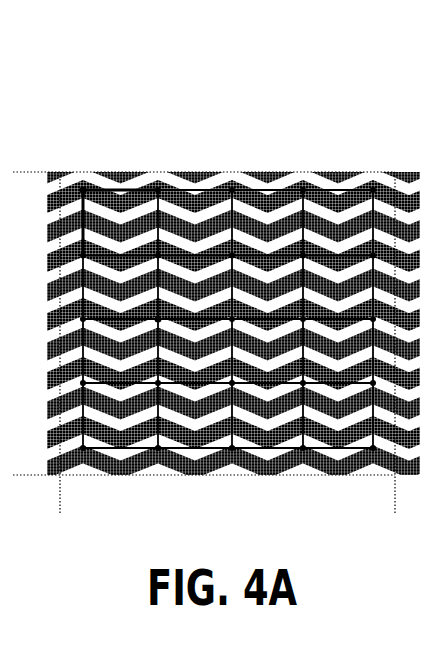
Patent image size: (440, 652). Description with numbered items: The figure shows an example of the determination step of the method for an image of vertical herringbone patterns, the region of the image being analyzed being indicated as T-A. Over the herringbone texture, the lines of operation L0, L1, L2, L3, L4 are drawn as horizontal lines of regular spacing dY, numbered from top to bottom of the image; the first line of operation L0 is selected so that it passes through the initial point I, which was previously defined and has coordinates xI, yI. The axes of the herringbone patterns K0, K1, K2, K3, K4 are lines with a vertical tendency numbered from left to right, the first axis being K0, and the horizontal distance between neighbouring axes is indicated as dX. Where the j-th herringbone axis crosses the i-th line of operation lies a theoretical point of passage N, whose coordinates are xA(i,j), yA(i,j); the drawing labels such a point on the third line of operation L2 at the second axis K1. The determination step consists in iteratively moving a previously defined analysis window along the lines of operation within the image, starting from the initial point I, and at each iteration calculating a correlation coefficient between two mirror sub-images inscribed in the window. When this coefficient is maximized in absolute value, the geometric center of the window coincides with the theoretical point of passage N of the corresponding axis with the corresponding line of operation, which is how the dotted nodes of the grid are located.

The target area / image region with grid T-A is at (352, 132).
The initial point I is at (83, 189).
The regular spacing dY is at (120, 173).
The vertical grid spacing dX is at (100, 223).
The theoretical point of passage N is at (158, 317).
The first line of operation L0 is at (195, 193).
The line of operation L1 is at (195, 258).
The line of operation L2 is at (195, 321).
The line of operation L3 is at (195, 382).
The line of operation L4 is at (195, 452).
The first axis of the herringbone patterns K0 is at (84, 352).
The axis of the herringbone patterns K1 is at (155, 352).
The axis of the herringbone patterns K2 is at (229, 352).
The axis of the herringbone patterns K3 is at (301, 352).
The axis of the herringbone patterns K4 is at (376, 352).